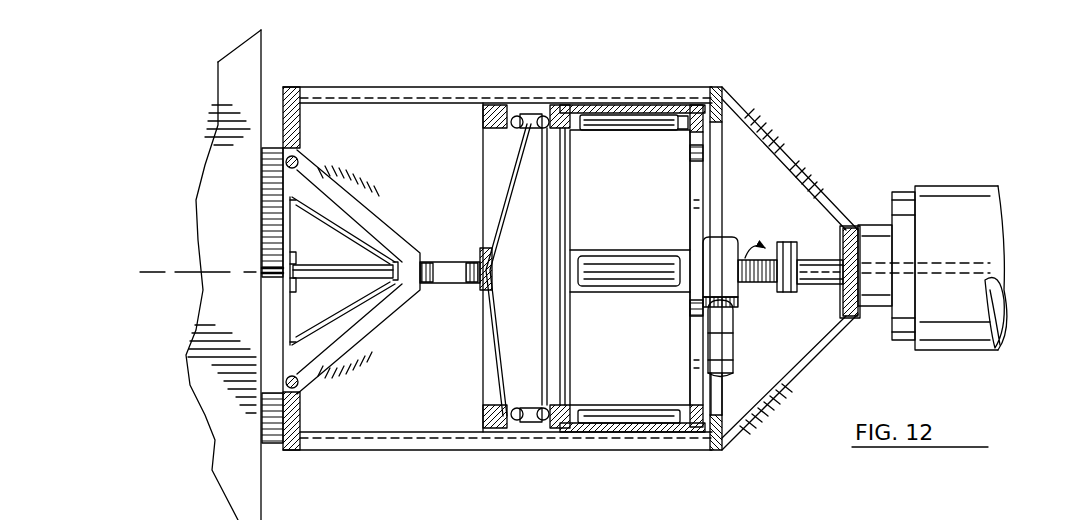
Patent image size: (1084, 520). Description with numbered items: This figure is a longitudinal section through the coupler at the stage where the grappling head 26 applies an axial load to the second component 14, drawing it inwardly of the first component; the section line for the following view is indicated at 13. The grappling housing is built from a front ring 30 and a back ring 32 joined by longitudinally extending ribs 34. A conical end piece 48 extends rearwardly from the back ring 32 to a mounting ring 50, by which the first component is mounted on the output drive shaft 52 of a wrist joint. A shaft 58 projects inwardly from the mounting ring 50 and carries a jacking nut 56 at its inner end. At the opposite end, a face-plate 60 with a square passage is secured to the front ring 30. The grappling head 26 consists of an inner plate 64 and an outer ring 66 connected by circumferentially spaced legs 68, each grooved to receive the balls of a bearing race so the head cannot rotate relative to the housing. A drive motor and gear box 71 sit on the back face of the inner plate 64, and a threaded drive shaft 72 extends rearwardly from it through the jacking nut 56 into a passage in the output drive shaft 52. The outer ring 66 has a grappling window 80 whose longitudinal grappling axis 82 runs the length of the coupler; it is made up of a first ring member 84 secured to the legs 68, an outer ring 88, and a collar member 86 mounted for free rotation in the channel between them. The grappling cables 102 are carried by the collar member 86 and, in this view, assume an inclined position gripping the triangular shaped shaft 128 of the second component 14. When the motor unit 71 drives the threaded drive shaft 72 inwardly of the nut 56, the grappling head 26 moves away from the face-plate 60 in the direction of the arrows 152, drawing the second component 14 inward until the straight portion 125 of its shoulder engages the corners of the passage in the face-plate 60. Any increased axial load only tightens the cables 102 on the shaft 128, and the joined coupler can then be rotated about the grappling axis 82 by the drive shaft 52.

The second component 14 is at (265, 75).
The grappling head 26 is at (486, 236).
The front ring 30 is at (300, 418).
The back ring 32 is at (733, 436).
The longitudinally extending ribs 34 is at (415, 88).
The conical end piece 48 is at (806, 166).
The mounting ring 50 is at (850, 312).
The output drive shaft 52 is at (884, 222).
The jacking nut 56 is at (786, 240).
The shaft 58 is at (818, 285).
The face-plate 60 is at (291, 448).
The inner plate 64 is at (697, 196).
The outer ring 66 is at (572, 380).
The legs 68 is at (630, 120).
The drive motor and gear box 71 is at (740, 336).
The threaded drive shaft 72 is at (746, 256).
The grappling window 80 is at (494, 174).
The grappling axis 82 is at (165, 272).
The first ring member 84 is at (553, 105).
The collar member 86 is at (545, 196).
The outer ring 88 is at (490, 105).
The grappling cables 102 is at (490, 212).
The straight portion 125 is at (300, 166).
The triangular shaped shaft 128 is at (447, 288).
The arrows 152 is at (470, 155).
The section line 13 is at (597, 85).